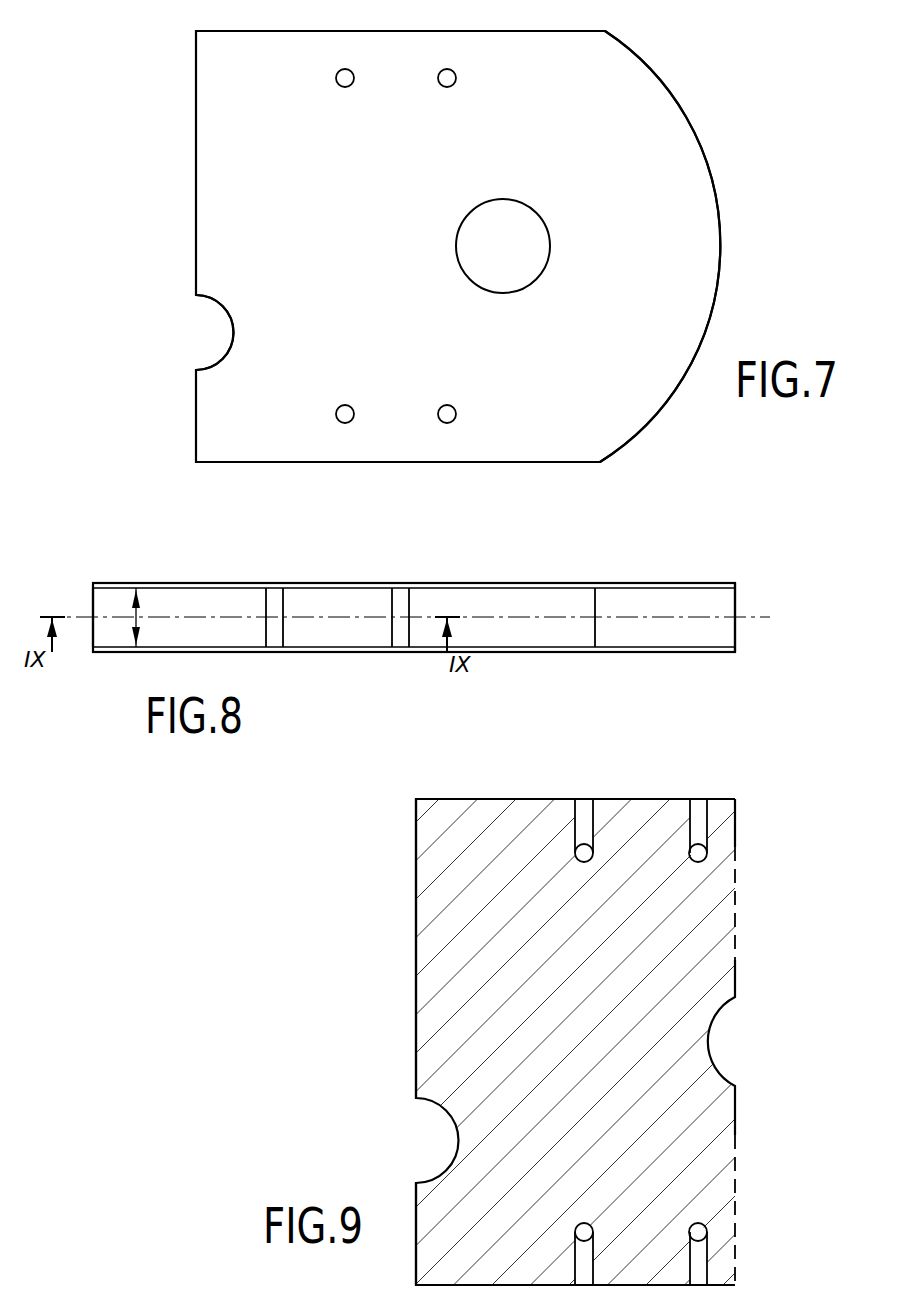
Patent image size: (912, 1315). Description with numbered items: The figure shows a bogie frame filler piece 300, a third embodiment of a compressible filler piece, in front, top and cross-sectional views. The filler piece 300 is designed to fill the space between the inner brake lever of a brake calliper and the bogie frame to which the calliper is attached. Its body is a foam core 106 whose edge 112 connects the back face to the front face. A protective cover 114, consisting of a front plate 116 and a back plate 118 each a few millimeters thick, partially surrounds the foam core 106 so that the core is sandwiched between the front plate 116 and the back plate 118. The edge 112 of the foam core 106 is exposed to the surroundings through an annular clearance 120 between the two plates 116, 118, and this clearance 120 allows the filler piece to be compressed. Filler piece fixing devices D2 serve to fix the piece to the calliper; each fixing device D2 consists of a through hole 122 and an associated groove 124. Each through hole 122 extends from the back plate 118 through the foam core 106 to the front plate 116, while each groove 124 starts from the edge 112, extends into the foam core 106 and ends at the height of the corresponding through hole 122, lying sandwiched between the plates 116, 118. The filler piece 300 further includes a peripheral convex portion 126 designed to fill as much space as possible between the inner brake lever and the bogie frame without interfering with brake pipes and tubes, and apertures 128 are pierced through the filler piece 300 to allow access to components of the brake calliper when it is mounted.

In FIG. 7, the bogie frame filler piece 300 is at (684, 52).
In FIG. 8, the bogie frame filler piece 300 is at (358, 680).
In FIG. 9, the bogie frame filler piece 300 is at (778, 810).
In FIG. 8, the foam core 106 is at (228, 630).
In FIG. 9, the foam core 106 is at (460, 870).
In FIG. 9, the edge 112 is at (453, 799).
In FIG. 8, the protective cover 114 is at (843, 508).
In FIG. 8, the front plate 116 is at (735, 583).
In FIG. 7, the back plate 118 is at (535, 435).
In FIG. 8, the back plate 118 is at (720, 650).
In FIG. 8, the annular clearance 120 is at (134, 613).
In FIG. 7, the through hole 122 is at (340, 418).
In FIG. 9, the through hole 122 is at (700, 853).
In FIG. 8, the groove 124 is at (275, 597).
In FIG. 9, the groove 124 is at (698, 813).
In FIG. 7, the peripheral convex portion 126 is at (673, 215).
In FIG. 7, the aperture 128 is at (213, 340).
In FIG. 9, the filler piece fixing device D2 is at (818, 1155).